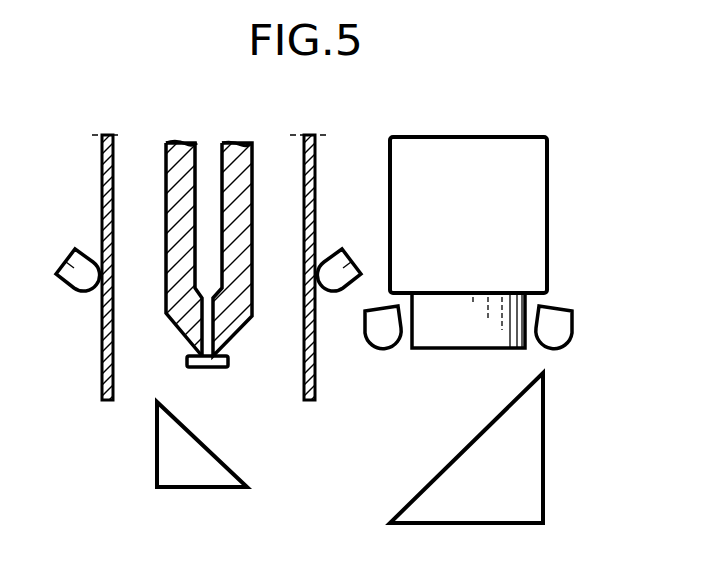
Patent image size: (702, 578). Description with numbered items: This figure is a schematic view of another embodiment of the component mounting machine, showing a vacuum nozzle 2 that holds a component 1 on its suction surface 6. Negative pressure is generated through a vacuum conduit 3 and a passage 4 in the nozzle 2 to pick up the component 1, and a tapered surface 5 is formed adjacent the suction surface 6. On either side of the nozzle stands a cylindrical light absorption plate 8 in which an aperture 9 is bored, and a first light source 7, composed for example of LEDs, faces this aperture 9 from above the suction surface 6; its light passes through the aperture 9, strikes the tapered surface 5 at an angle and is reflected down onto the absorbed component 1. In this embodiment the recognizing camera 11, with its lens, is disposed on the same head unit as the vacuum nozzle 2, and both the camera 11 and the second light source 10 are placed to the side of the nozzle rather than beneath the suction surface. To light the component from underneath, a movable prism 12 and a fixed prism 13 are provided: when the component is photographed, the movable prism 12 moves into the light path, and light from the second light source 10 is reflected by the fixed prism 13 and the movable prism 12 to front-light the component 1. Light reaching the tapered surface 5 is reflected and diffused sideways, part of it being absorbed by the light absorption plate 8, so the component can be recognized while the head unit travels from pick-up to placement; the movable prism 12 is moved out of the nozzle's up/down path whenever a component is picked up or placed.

The component 1 is at (205, 368).
The vacuum nozzle 2 is at (184, 155).
The vacuum conduit 3 is at (208, 195).
The passage 4 is at (205, 318).
The tapered surface 5 is at (176, 331).
The suction surface 6 is at (224, 368).
The first light source 7 is at (66, 262).
The light absorption plate 8 is at (102, 162).
The aperture 9 is at (103, 377).
The second light source 10 is at (378, 327).
The recognizing camera 11 is at (463, 153).
The movable prism 12 is at (193, 494).
The fixed prism 13 is at (530, 507).